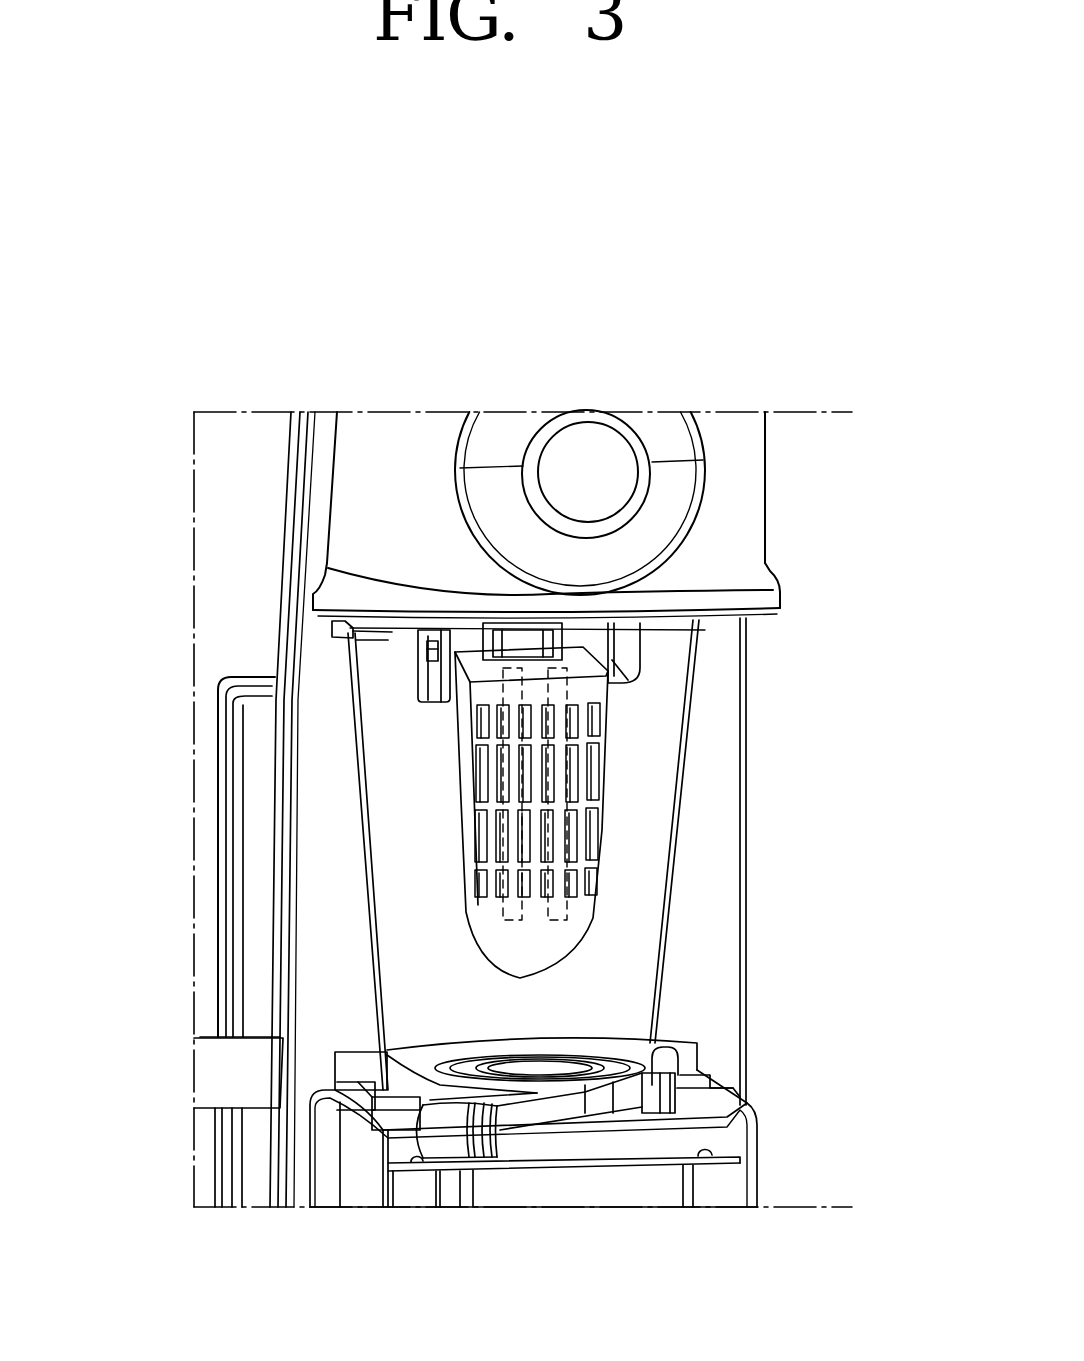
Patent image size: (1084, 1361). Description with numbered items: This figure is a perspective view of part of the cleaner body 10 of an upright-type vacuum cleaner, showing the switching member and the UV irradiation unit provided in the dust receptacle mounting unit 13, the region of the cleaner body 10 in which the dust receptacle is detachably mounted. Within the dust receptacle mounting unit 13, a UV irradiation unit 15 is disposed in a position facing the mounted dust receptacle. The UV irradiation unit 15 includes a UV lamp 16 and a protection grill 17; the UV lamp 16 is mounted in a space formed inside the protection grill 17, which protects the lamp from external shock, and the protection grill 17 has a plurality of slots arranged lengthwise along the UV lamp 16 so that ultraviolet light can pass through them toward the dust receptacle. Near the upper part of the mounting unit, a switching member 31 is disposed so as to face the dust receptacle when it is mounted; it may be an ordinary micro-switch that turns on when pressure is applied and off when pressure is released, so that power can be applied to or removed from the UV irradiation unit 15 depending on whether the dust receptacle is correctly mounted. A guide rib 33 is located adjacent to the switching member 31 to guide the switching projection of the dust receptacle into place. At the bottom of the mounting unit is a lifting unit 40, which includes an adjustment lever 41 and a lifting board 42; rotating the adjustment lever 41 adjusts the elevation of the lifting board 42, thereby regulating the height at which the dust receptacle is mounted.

The cleaner body 10 is at (747, 500).
The dust receptacle mounting unit 13 is at (688, 942).
The UV irradiation unit 15 is at (820, 718).
The UV lamp 16 is at (625, 685).
The protection grill 17 is at (600, 772).
The switching member 31 is at (427, 650).
The guide rib 33 is at (430, 682).
The lifting unit 40 is at (555, 1280).
The adjustment lever 41 is at (448, 1140).
The lifting board 42 is at (553, 1068).